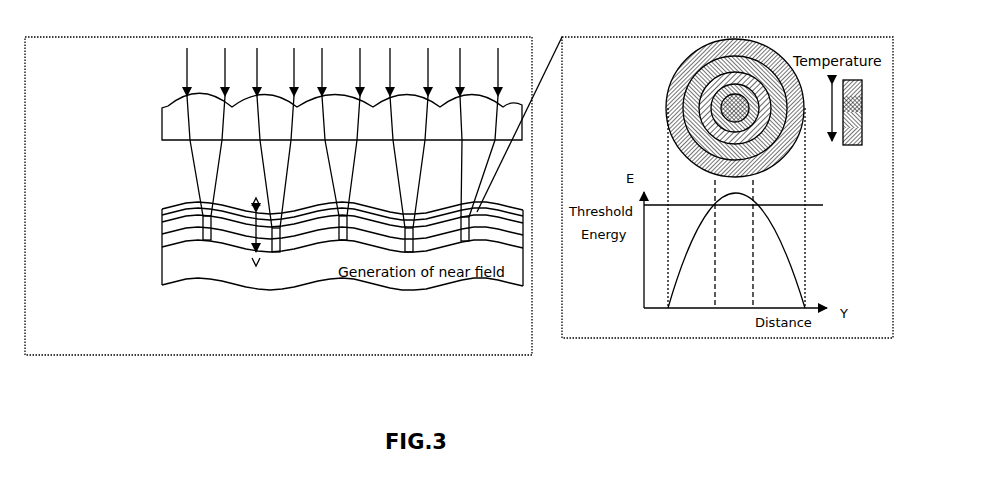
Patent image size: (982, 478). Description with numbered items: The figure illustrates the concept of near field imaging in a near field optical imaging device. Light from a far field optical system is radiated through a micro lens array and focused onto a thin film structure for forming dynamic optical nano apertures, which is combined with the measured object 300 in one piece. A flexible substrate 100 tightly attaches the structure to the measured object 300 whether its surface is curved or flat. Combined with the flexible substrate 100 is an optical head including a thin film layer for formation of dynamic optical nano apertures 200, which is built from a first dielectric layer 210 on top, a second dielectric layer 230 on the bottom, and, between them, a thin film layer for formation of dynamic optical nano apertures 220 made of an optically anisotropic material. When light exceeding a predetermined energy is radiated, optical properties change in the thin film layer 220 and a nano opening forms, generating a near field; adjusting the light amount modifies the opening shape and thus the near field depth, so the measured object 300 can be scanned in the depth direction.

The flexible substrate 100 is at (162, 213).
The thin film layer for formation of dynamic optical nano apertures 200 is at (84, 228).
The first dielectric layer 210 is at (162, 219).
The thin film layer for formation of dynamic optical nano apertures 220 is at (162, 229).
The second dielectric layer 230 is at (162, 242).
The measured object 300 is at (188, 284).